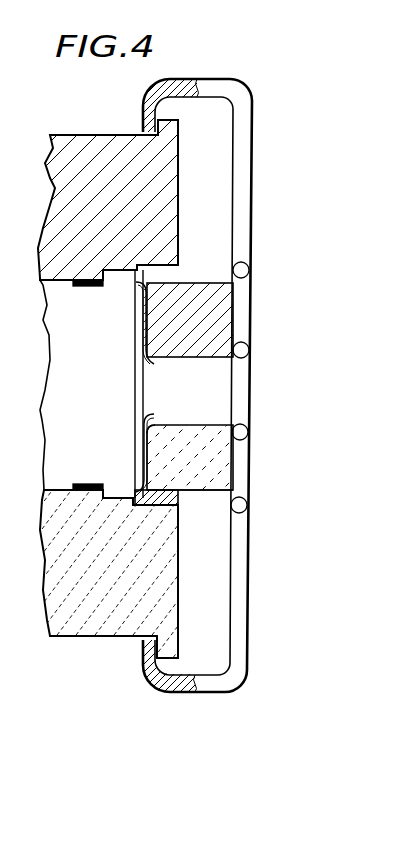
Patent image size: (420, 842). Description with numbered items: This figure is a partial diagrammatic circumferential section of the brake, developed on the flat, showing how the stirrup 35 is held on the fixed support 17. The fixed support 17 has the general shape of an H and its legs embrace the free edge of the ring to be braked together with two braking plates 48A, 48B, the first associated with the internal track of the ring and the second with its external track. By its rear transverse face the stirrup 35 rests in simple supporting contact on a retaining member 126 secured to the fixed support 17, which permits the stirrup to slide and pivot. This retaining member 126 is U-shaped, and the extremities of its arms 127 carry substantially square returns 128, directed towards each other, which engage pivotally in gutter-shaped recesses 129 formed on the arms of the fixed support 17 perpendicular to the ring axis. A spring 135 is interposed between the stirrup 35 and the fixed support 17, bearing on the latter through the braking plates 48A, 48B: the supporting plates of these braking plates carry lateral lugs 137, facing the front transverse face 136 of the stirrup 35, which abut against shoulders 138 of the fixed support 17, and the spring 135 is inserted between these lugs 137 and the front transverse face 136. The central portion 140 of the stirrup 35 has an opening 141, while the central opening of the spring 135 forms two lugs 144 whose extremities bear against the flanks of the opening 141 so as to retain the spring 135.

The fixed support 17 is at (210, 421).
The stirrup 35 is at (209, 495).
The braking plate 48A is at (74, 397).
The braking plate 48B is at (123, 397).
The retaining member 126 is at (210, 421).
The arms 127 is at (224, 80).
The returns 128 is at (146, 111).
The recesses 129 is at (150, 121).
The spring 135 is at (149, 331).
The front transverse face 136 is at (141, 470).
The lugs 137 is at (140, 266).
The shoulders 138 is at (86, 287).
The central portion 140 is at (213, 460).
The opening 141 is at (205, 425).
The lugs 144 is at (154, 363).